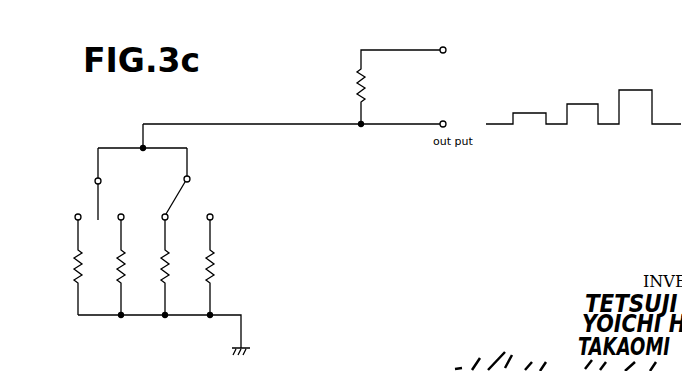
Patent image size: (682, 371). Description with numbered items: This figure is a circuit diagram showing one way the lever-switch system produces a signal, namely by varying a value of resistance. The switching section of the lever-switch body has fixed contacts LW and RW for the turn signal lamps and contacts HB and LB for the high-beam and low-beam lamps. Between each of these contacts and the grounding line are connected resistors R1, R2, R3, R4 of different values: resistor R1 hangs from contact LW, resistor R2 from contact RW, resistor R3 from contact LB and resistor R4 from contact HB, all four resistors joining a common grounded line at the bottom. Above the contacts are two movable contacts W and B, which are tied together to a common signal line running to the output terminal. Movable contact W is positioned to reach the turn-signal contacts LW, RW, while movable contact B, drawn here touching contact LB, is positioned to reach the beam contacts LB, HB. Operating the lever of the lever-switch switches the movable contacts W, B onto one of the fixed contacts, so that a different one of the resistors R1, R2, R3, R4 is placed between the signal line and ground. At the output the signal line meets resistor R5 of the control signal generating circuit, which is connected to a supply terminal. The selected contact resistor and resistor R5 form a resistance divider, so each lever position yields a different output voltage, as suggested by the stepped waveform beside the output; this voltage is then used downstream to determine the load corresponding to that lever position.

The resistor R1 is at (74, 262).
The resistor R2 is at (117, 258).
The resistor R3 is at (161, 258).
The resistor R4 is at (206, 258).
The resistor R5 is at (357, 83).
The movable contact W is at (83, 199).
The movable contact B is at (180, 193).
The contact for turn signal lamp LW is at (73, 216).
The contact for turn signal lamp RW is at (122, 213).
The contact for low-beam lamp LB is at (161, 217).
The contact for high-beam lamp HB is at (214, 215).